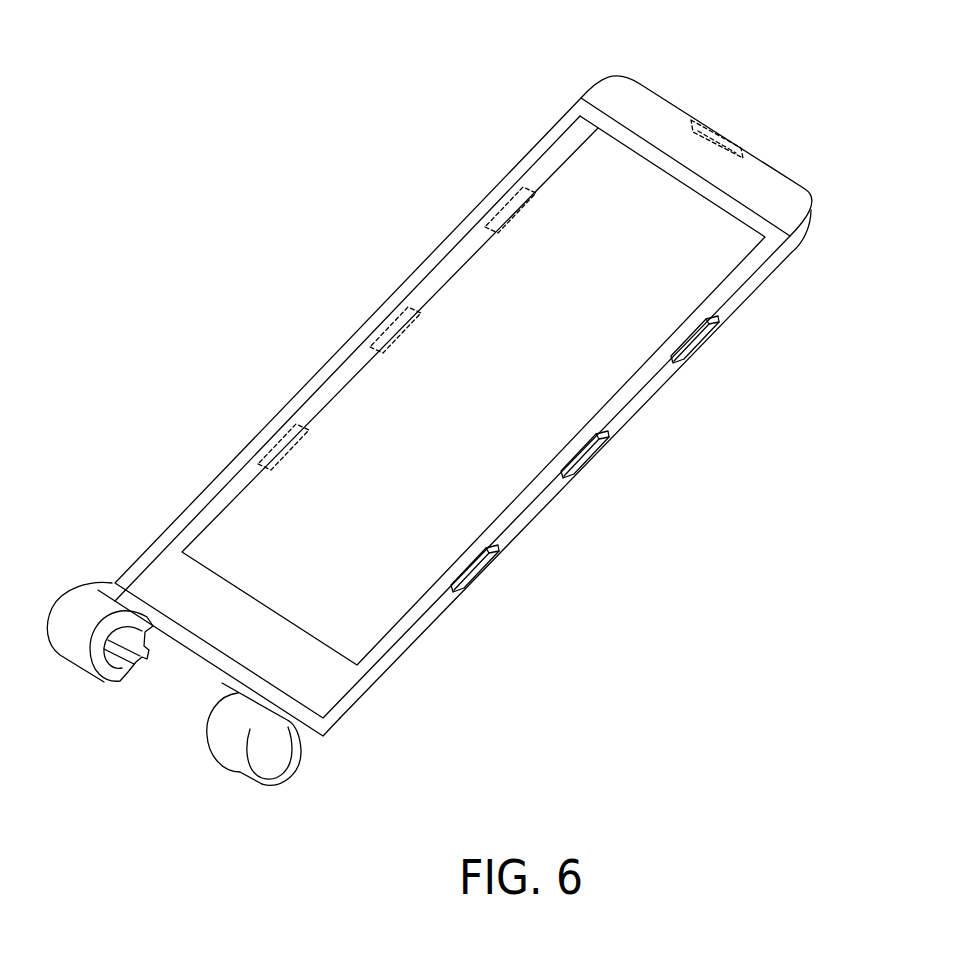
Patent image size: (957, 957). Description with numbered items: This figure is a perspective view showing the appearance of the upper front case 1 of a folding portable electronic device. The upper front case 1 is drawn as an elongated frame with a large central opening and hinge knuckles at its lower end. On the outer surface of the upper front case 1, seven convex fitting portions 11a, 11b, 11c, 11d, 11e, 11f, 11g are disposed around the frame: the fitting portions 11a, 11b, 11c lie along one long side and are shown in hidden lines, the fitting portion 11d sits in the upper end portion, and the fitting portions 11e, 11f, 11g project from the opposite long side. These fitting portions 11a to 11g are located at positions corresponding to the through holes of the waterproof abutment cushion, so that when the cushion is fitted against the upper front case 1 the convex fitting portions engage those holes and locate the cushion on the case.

The upper front case 1 is at (656, 92).
The fitting portion 11a is at (275, 458).
The fitting portion 11b is at (388, 330).
The fitting portion 11c is at (503, 207).
The fitting portion 11d is at (727, 140).
The fitting portion 11e is at (703, 341).
The fitting portion 11f is at (593, 462).
The fitting portion 11g is at (473, 575).